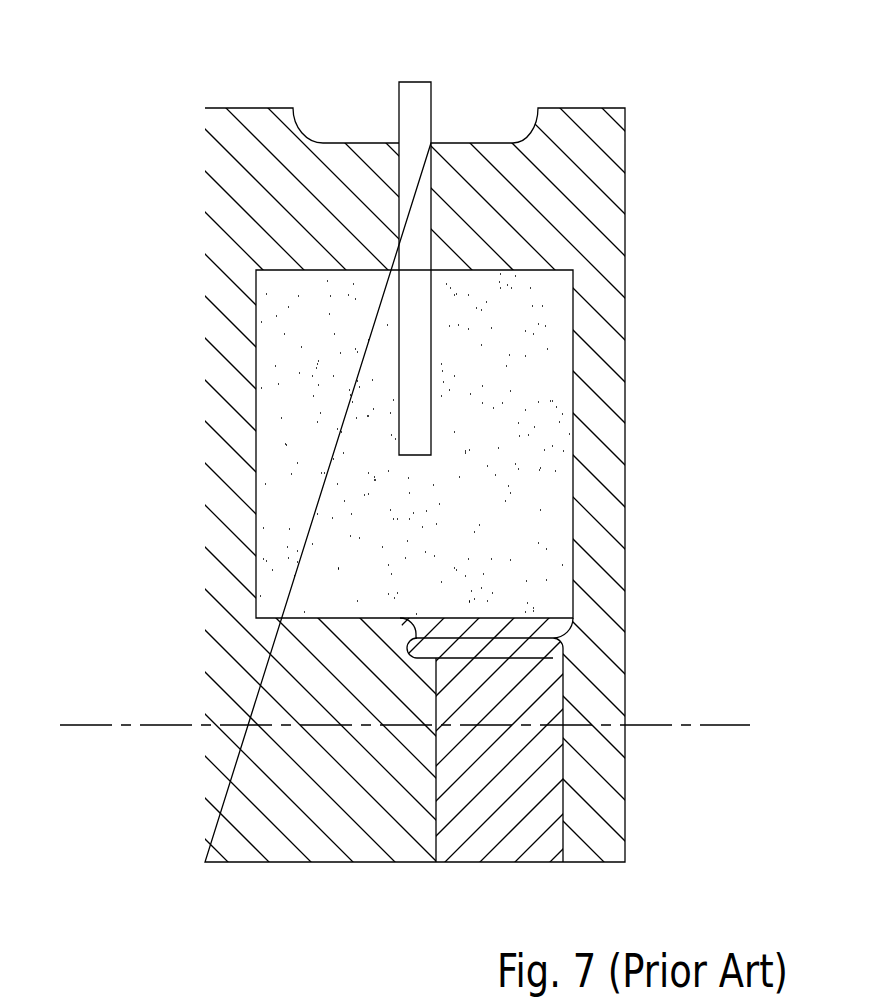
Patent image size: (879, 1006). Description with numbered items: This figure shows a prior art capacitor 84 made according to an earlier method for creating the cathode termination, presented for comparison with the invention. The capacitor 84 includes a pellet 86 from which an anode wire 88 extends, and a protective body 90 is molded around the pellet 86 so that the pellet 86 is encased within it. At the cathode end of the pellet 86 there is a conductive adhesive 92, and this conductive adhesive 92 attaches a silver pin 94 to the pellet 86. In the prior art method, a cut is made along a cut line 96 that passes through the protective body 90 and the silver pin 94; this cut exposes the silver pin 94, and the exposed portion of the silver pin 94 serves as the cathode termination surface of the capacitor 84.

The prior art capacitor 84 is at (205, 107).
The pellet 86 is at (256, 270).
The anode wire 88 is at (399, 218).
The protective body 90 is at (205, 397).
The conductive adhesive 92 is at (403, 627).
The silver pin 94 is at (436, 695).
The cut line 96 is at (142, 723).